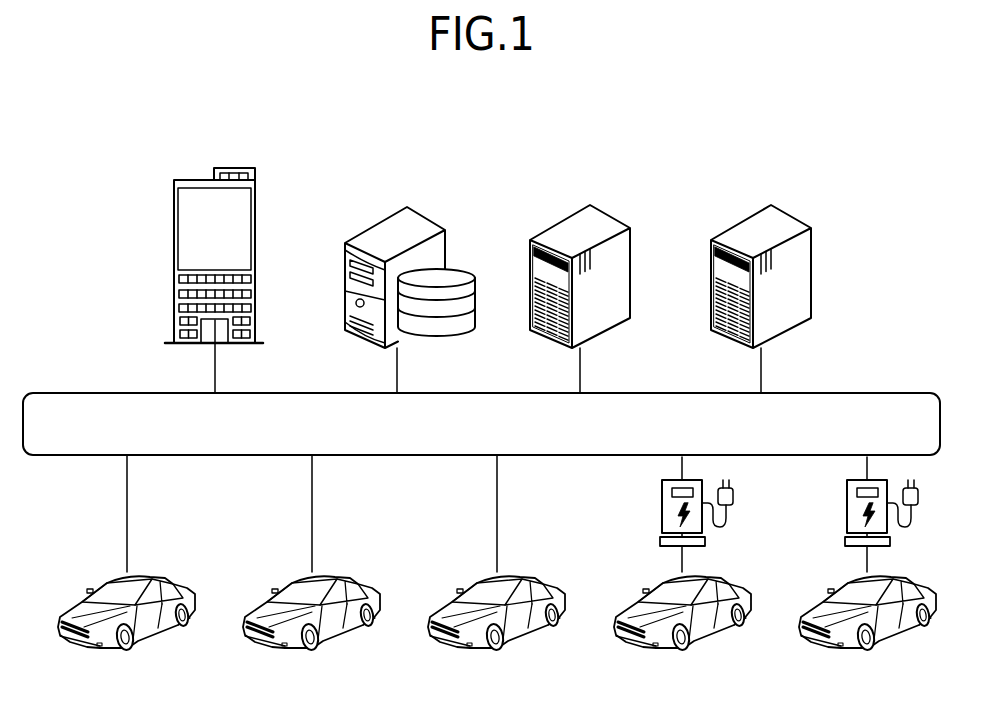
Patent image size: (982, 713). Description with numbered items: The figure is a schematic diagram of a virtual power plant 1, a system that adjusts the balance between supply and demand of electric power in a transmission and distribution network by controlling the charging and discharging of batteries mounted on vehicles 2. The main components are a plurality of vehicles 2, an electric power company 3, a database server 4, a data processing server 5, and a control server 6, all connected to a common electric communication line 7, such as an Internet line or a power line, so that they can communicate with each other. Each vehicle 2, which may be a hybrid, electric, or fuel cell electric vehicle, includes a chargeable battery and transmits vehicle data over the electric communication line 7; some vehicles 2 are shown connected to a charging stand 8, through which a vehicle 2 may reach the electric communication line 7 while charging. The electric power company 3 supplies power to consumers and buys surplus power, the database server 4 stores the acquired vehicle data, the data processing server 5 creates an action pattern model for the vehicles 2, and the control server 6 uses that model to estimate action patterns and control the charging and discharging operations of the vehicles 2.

The virtual power plant 1 is at (509, 147).
The vehicle 2 is at (157, 630).
The electric power company 3 is at (230, 167).
The database server 4 is at (423, 218).
The data processing server 5 is at (607, 213).
The control server 6 is at (788, 213).
The electric communication line 7 is at (880, 393).
The charging stand 8 is at (662, 503).